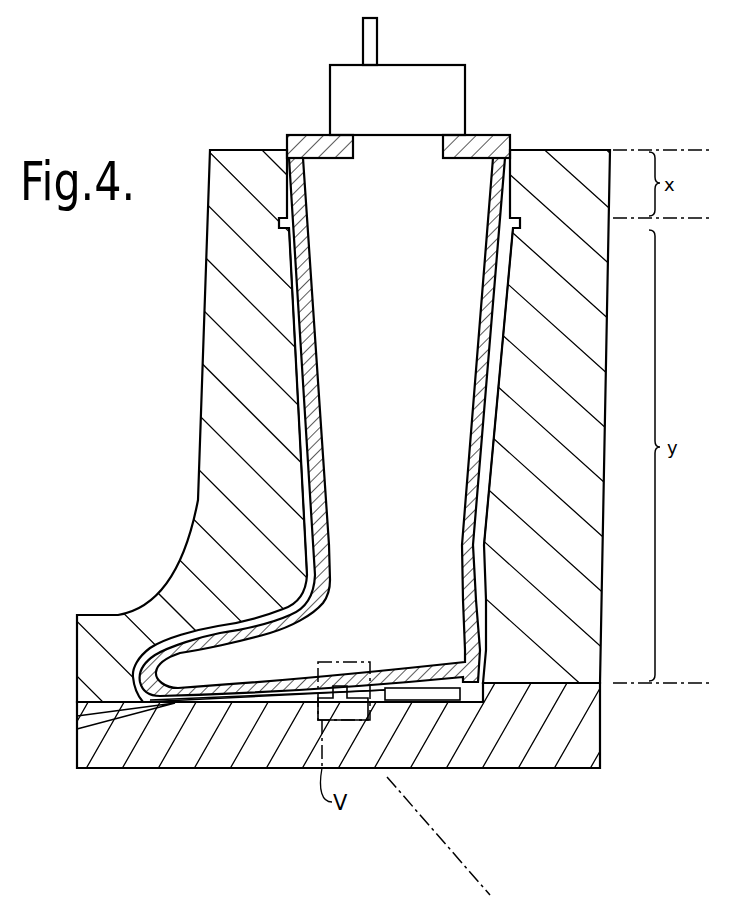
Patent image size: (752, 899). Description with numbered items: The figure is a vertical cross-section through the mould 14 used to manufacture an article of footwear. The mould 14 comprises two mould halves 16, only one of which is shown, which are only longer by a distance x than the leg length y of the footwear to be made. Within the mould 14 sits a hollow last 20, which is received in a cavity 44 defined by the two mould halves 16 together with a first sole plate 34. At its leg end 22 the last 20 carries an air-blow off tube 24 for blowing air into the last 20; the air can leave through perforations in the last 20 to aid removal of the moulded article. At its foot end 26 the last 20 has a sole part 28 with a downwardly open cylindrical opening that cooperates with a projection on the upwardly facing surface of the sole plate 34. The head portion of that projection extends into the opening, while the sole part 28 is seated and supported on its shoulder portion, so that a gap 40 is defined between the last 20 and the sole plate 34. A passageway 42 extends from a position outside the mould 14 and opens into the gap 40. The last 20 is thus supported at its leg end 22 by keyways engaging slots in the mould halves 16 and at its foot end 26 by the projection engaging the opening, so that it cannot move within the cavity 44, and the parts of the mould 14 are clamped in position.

The mould 14 is at (152, 282).
The mould half 16 is at (226, 367).
The last 20 is at (298, 410).
The leg end 22 is at (305, 135).
The air-blow off tube 24 is at (377, 44).
The foot end 26 is at (232, 705).
The sole part 28 is at (440, 700).
The first sole plate 34 is at (568, 748).
The gap 40 is at (290, 708).
The passageway 42 is at (82, 714).
The cavity 44 is at (307, 475).